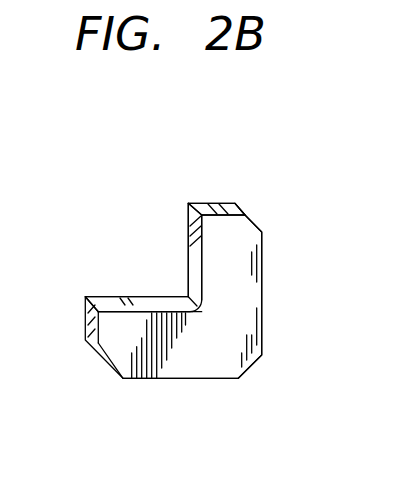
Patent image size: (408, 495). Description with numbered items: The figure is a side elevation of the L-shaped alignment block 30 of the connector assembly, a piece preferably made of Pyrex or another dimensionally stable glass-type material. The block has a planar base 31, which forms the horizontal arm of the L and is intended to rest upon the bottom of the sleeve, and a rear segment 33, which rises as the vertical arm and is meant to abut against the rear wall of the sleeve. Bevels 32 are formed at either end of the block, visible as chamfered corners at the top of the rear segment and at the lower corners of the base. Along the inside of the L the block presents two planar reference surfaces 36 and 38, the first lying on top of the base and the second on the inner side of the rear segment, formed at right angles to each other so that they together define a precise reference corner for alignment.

The L-shaped alignment block 30 is at (249, 407).
The planar base 31 is at (155, 378).
The bevels 32 is at (222, 203).
The rear segment 33 is at (262, 293).
The planar reference surface 36 is at (113, 297).
The planar reference surface 38 is at (188, 227).